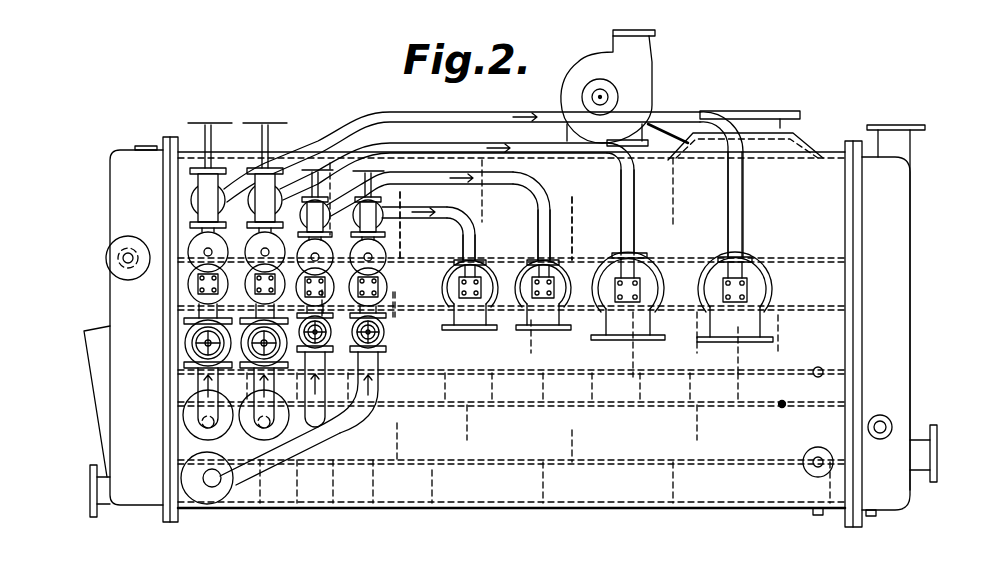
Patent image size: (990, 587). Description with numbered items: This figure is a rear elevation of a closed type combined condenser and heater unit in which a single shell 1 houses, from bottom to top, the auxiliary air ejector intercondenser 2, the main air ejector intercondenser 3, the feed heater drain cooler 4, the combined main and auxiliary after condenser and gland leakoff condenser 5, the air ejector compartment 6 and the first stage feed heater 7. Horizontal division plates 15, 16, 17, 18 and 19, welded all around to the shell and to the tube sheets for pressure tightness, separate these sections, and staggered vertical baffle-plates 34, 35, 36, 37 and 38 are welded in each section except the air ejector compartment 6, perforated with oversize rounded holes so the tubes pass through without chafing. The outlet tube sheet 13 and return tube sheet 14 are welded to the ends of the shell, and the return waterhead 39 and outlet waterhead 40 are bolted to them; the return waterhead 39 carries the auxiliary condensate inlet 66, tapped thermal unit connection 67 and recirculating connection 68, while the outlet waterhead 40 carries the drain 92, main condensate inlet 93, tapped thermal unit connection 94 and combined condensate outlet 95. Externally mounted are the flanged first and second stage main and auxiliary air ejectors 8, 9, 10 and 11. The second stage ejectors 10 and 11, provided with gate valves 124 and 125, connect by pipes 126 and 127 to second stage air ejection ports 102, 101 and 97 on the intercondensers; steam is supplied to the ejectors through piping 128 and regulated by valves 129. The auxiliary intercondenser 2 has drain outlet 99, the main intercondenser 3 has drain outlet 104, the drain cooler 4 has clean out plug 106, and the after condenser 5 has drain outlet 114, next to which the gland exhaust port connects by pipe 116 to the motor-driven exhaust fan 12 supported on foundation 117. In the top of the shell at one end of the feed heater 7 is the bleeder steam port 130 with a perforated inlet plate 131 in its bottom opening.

The shell 1 is at (618, 508).
The auxiliary air ejector intercondenser 2 is at (398, 507).
The main air ejector intercondenser 3 is at (511, 481).
The feed heater drain cooler 4 is at (641, 406).
The combined main and auxiliary after condenser and gland leakoff condenser 5 is at (511, 357).
The air ejector compartment 6 is at (511, 326).
The first stage feed heater 7 is at (511, 229).
The first stage main air ejector 8 is at (640, 288).
The first stage auxiliary air ejector 9 is at (484, 284).
The second stage main air ejector 10 is at (228, 270).
The second stage auxiliary air ejector 11 is at (324, 270).
The motor-driven exhaust fan 12 is at (645, 87).
The outlet tube sheet 13 is at (844, 322).
The return tube sheet 14 is at (172, 137).
The horizontal division plate 15 is at (472, 463).
The horizontal division plate 16 is at (486, 401).
The horizontal division plate 17 is at (448, 374).
The horizontal division plate 18 is at (400, 312).
The horizontal division plate 19 is at (410, 260).
The vertical baffle-plate 34 is at (543, 480).
The vertical baffle-plate 35 is at (463, 428).
The vertical baffle-plate 36 is at (644, 381).
The vertical baffle-plate 37 is at (632, 352).
The vertical baffle-plate 38 is at (675, 197).
The return waterhead 39 is at (116, 165).
The outlet waterhead 40 is at (904, 247).
The auxiliary condensate inlet 66 is at (88, 490).
The tapped thermal unit connection 67 is at (95, 326).
The recirculating connection 68 is at (124, 258).
The drain 92 is at (872, 518).
The main condensate inlet 93 is at (938, 462).
The tapped thermal unit connection 94 is at (890, 422).
The combined condensate outlet 95 is at (905, 119).
The port for second stage air ejection 97 is at (235, 484).
The drain outlet 99 is at (818, 518).
The port for second stage air ejection 101 is at (329, 423).
The port for second stage air ejection 102 is at (188, 425).
The drain outlet 104 is at (816, 453).
The clean out plug 106 is at (788, 404).
The drain outlet 114 is at (818, 367).
The pipe 116 is at (655, 109).
The foundation 117 is at (630, 158).
The gate valve 124 is at (241, 347).
The gate valve 125 is at (386, 335).
The pipe 126 is at (254, 386).
The pipe 127 is at (380, 390).
The steam piping 128 is at (466, 228).
The valve 129 is at (254, 199).
The bleeder steam port 130 is at (762, 102).
The perforated inlet plate 131 is at (790, 150).